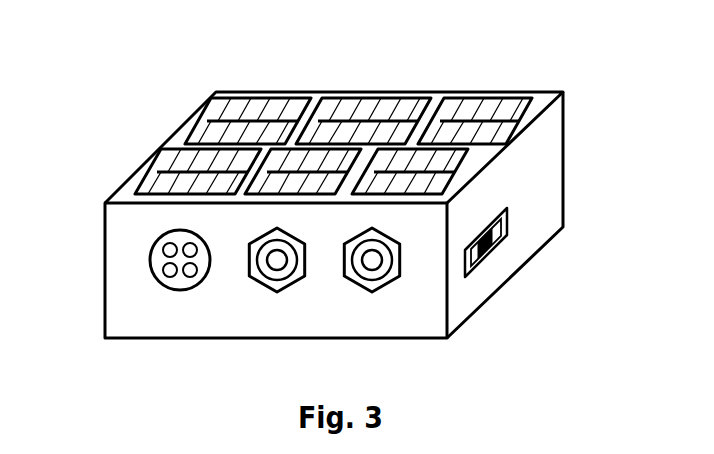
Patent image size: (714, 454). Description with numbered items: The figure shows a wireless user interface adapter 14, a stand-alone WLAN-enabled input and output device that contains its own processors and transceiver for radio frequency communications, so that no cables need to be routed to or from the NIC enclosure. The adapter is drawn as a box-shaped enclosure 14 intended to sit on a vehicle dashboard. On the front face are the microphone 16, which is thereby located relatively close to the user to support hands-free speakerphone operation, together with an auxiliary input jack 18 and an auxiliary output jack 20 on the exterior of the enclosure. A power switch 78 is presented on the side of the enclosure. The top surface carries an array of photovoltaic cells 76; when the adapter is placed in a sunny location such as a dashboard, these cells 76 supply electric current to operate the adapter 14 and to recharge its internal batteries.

The wireless user interface adapter 14 is at (148, 159).
The microphone 16 is at (150, 266).
The auxiliary input jack 18 is at (252, 282).
The auxiliary output jack 20 is at (396, 268).
The photovoltaic cells 76 is at (290, 90).
The power switch 78 is at (507, 223).